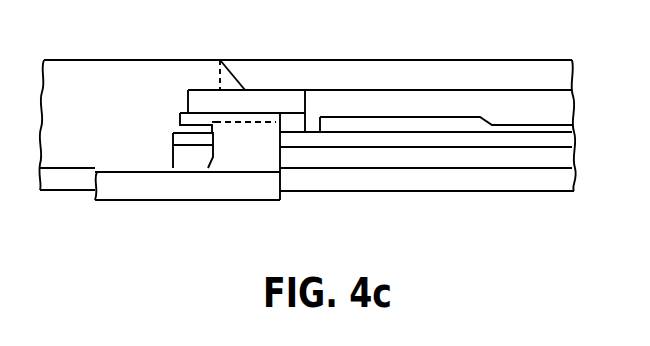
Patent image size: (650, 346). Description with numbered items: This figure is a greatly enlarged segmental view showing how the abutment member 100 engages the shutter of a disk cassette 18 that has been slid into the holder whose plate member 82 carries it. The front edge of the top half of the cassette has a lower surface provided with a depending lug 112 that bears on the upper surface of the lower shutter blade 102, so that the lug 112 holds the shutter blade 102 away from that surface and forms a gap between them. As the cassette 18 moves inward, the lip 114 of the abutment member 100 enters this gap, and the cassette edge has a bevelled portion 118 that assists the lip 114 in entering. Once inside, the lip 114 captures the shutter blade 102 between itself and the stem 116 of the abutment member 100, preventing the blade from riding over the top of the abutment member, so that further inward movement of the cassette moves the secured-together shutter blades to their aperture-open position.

The disk cassette 18 is at (422, 60).
The plate member 82 is at (492, 177).
The abutment member 100 is at (269, 113).
The shutter blade 102 is at (397, 136).
The lug 112 is at (313, 125).
The lip 114 is at (180, 125).
The stem 116 is at (227, 145).
The bevelled portion 118 is at (249, 102).